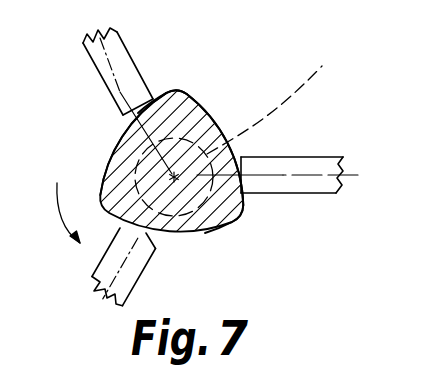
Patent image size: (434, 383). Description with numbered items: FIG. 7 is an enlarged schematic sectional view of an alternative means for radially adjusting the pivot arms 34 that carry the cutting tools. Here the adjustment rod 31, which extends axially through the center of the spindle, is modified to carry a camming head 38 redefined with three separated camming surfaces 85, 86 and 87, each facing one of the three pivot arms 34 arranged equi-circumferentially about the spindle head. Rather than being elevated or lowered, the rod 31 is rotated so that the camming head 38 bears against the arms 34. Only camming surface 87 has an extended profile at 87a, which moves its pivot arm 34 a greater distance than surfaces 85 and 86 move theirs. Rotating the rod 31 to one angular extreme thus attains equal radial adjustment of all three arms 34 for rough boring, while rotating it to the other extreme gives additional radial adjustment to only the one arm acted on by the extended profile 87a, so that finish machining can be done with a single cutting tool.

The adjustment rod 31 is at (278, 100).
The pivot arm 34 is at (133, 52).
The camming head 38 is at (186, 241).
The camming surface 85 is at (208, 120).
The camming surface 86 is at (222, 227).
The camming surface 87 is at (115, 152).
The extended profile 87a is at (151, 101).